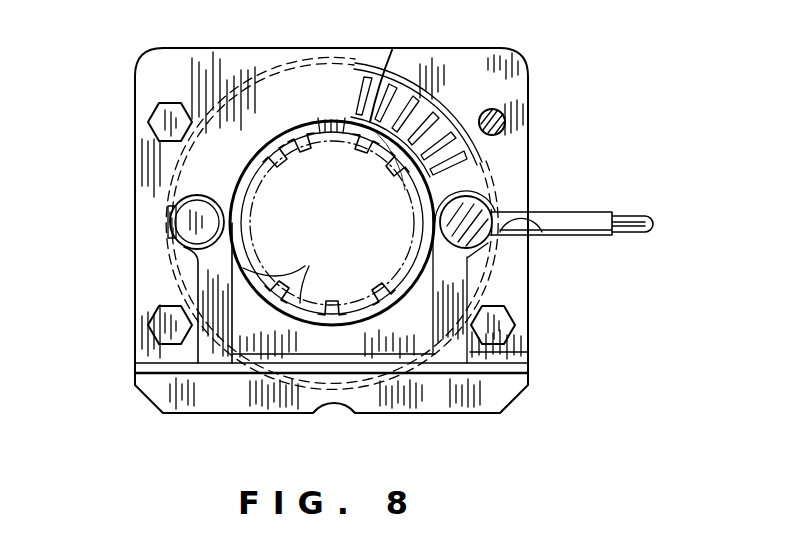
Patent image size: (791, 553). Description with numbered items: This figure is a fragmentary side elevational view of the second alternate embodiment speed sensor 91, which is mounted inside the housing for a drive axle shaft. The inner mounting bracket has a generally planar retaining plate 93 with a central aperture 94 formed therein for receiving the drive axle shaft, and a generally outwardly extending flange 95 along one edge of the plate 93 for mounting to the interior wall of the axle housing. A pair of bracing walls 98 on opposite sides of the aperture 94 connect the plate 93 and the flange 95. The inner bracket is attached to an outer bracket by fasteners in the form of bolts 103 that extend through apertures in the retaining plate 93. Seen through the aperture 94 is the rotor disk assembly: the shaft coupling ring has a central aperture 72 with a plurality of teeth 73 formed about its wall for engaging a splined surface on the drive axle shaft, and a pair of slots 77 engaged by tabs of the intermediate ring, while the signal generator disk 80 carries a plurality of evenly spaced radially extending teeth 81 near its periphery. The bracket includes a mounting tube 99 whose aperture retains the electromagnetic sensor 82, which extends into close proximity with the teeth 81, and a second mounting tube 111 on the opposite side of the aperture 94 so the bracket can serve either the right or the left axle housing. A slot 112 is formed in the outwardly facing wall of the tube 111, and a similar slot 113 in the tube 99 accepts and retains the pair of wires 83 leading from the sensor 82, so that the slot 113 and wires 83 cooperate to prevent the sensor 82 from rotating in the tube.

The speed sensor 91 is at (553, 30).
The retaining plate 93 is at (150, 174).
The flange 95 is at (152, 388).
The bolts 103 is at (153, 117).
The central aperture 72 is at (383, 155).
The central aperture 94 is at (243, 268).
The slots 77 is at (326, 146).
The teeth 73 is at (283, 272).
The teeth 81 is at (437, 125).
The signal generator disk 80 is at (427, 168).
The mounting tube 99 is at (487, 186).
The electromagnetic sensor 82 is at (453, 220).
The second mounting tube 111 is at (173, 202).
The slot 112 is at (167, 230).
The bracing walls 98 is at (230, 330).
The wires 83 is at (637, 212).
The slot 113 is at (537, 231).